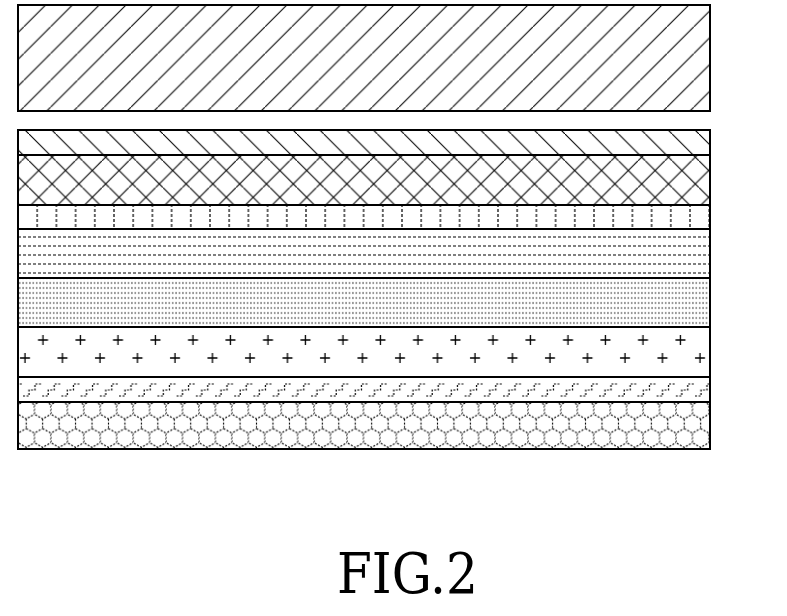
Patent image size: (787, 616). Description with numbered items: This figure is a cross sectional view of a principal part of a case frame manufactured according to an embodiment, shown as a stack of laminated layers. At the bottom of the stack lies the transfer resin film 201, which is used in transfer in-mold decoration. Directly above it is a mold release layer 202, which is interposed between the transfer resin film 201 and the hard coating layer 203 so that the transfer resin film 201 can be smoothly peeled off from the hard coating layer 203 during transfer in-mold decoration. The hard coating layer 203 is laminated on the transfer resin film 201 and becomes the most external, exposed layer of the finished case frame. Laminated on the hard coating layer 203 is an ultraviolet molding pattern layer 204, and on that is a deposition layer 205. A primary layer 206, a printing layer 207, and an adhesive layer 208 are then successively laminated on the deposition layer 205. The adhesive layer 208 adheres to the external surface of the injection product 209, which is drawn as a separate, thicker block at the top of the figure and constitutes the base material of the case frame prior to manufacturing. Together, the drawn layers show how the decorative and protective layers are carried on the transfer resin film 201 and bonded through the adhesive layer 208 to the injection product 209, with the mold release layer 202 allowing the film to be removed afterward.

The transfer resin film 201 is at (711, 422).
The mold release layer 202 is at (711, 387).
The hard coating layer 203 is at (711, 348).
The ultraviolet molding pattern layer 204 is at (711, 298).
The deposition layer 205 is at (711, 250).
The primary layer 206 is at (711, 213).
The printing layer 207 is at (711, 177).
The adhesive layer 208 is at (711, 140).
The injection product 209 is at (711, 57).